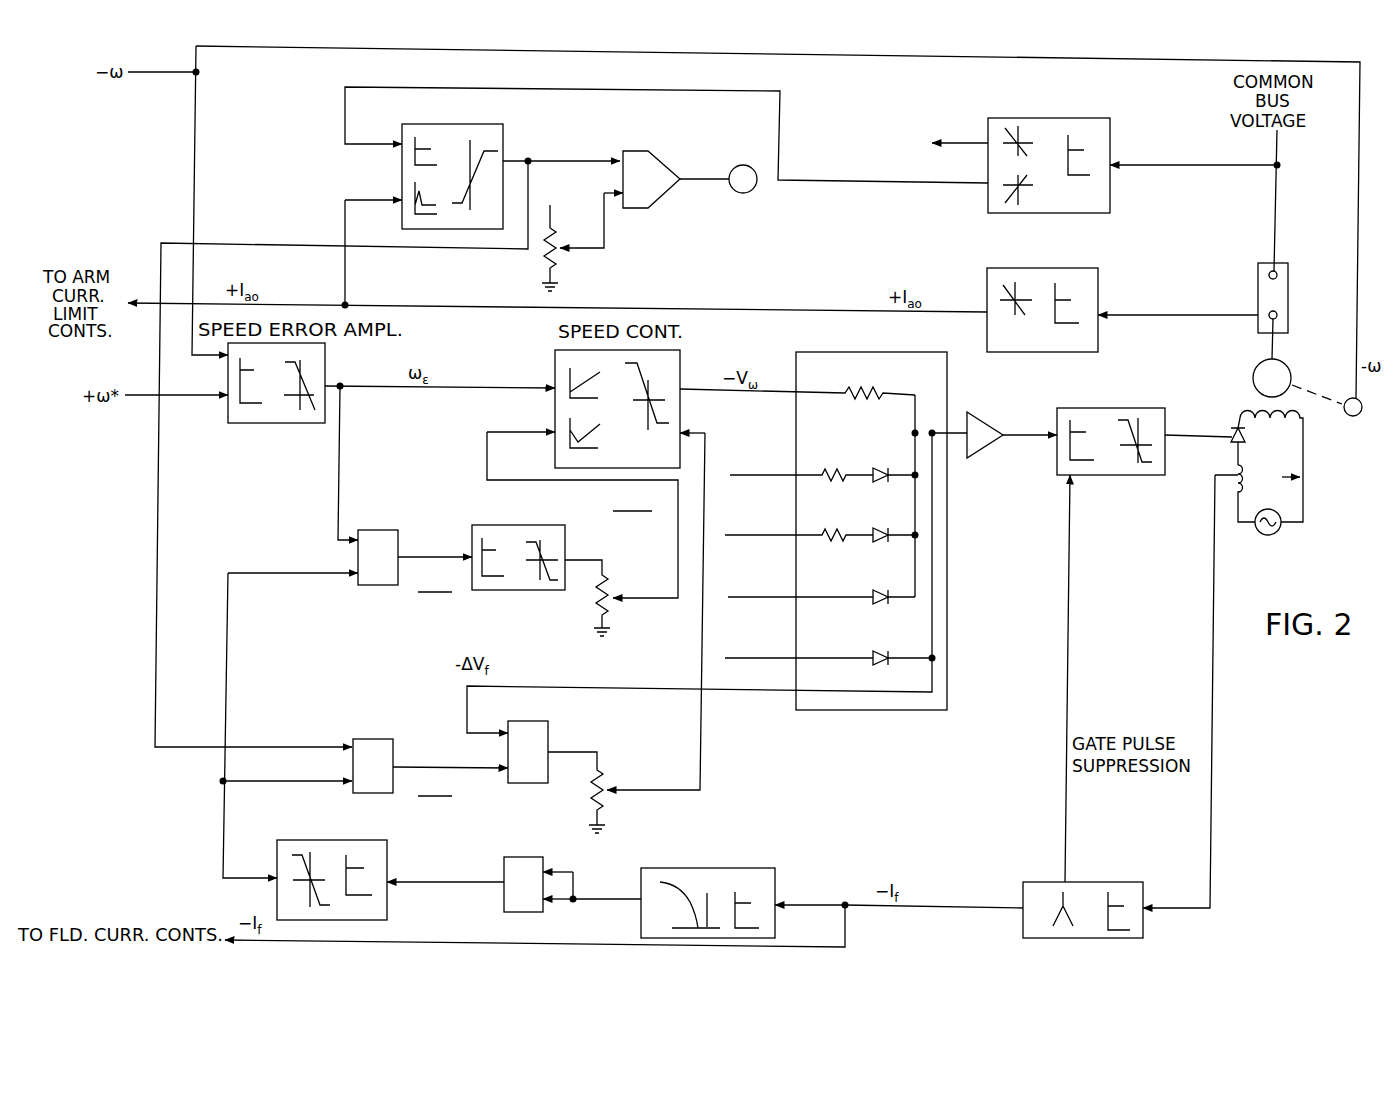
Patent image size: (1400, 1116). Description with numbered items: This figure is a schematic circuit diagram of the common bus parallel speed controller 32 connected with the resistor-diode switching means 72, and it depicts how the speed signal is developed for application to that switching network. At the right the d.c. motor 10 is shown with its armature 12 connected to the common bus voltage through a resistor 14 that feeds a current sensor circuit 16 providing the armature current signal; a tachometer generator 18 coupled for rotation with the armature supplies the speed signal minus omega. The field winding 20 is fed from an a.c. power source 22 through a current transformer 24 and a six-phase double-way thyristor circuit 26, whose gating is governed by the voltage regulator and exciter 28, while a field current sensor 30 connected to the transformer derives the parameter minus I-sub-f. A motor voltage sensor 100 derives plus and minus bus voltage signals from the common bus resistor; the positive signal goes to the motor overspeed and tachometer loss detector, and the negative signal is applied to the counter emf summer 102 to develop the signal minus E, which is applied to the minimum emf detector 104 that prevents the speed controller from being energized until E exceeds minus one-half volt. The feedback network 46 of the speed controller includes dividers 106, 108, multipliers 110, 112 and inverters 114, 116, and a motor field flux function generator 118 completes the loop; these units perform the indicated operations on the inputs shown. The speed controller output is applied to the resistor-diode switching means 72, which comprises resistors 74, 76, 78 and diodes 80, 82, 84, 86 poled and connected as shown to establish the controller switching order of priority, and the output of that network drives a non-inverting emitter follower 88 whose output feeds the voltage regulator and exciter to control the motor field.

The d.c. motor 10 is at (1240, 388).
The armature 12 is at (1289, 371).
The resistor 14 is at (1288, 283).
The current sensor circuit 16 is at (1098, 297).
The tachometer generator 18 is at (1378, 400).
The field winding 20 is at (1265, 416).
The a.c. power source 22 is at (1276, 538).
The current transformer 24 is at (1232, 471).
The six-phase double-way thyristor circuit 26 is at (1232, 431).
The voltage regulator and exciter 28 is at (1057, 413).
The field current sensor 30 is at (1140, 882).
The speed controller 32 is at (202, 800).
The feedback network 46 is at (208, 662).
The resistor-diode switching means 72 is at (950, 389).
The resistor 74 is at (852, 399).
The resistor 76 is at (831, 481).
The resistor 78 is at (831, 541).
The diode 80 is at (871, 470).
The diode 82 is at (872, 530).
The diode 84 is at (872, 591).
The diode 86 is at (870, 653).
The non-inverting emitter follower 88 is at (977, 416).
The motor voltage sensor 100 is at (1110, 190).
The counter emf summer 102 is at (401, 180).
The minimum emf detector 104 is at (663, 158).
The divider 106 is at (368, 588).
The divider 108 is at (393, 747).
The multiplier 110 is at (548, 730).
The multiplier 112 is at (540, 912).
The inverter 114 is at (515, 592).
The inverter 116 is at (387, 912).
The motor field flux function generator 118 is at (775, 882).